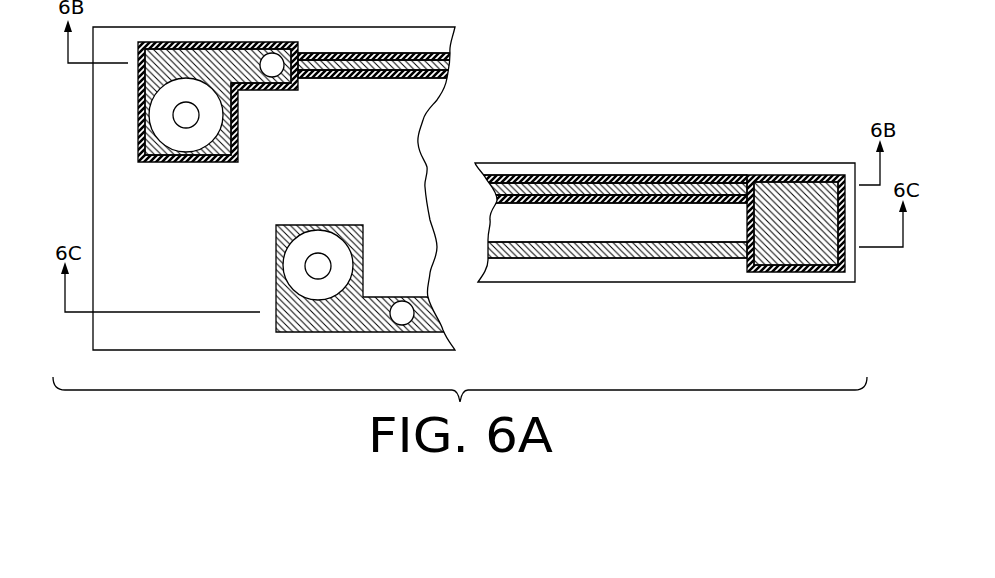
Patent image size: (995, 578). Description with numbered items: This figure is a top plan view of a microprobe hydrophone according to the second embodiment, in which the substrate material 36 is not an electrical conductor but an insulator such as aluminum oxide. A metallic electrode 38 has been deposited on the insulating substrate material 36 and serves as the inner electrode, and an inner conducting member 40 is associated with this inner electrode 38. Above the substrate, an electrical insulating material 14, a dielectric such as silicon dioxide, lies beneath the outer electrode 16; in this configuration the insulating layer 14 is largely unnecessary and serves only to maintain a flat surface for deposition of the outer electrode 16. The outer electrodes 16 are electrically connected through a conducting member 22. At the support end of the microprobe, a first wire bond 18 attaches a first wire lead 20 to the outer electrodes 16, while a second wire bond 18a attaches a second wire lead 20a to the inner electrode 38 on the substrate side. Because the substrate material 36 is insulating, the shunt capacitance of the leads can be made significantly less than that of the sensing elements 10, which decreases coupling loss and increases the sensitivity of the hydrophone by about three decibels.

The sensing element 10 is at (790, 272).
The electrical insulating material 14 is at (550, 175).
The outer electrode 16 is at (664, 175).
The first wire bond 18 is at (163, 107).
The second wire bond 18a is at (314, 243).
The first wire lead 20 is at (193, 122).
The second wire lead 20a is at (301, 273).
The conducting member 22 is at (284, 78).
The substrate material 36 is at (158, 264).
The metallic electrode 38 is at (432, 307).
The inner conducting member 40 is at (393, 302).